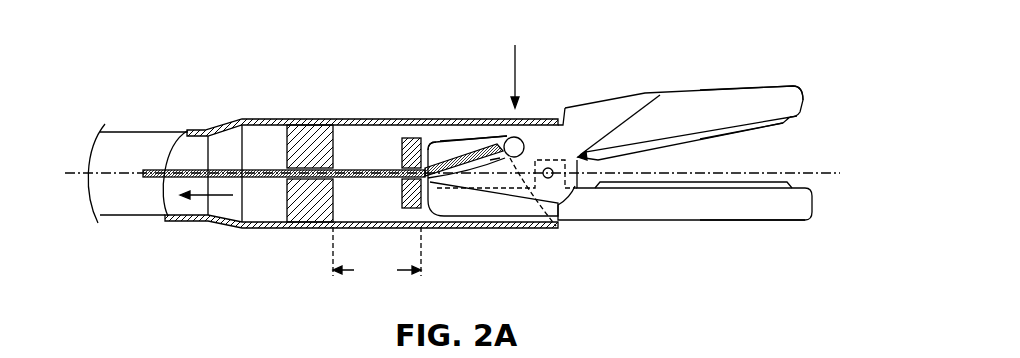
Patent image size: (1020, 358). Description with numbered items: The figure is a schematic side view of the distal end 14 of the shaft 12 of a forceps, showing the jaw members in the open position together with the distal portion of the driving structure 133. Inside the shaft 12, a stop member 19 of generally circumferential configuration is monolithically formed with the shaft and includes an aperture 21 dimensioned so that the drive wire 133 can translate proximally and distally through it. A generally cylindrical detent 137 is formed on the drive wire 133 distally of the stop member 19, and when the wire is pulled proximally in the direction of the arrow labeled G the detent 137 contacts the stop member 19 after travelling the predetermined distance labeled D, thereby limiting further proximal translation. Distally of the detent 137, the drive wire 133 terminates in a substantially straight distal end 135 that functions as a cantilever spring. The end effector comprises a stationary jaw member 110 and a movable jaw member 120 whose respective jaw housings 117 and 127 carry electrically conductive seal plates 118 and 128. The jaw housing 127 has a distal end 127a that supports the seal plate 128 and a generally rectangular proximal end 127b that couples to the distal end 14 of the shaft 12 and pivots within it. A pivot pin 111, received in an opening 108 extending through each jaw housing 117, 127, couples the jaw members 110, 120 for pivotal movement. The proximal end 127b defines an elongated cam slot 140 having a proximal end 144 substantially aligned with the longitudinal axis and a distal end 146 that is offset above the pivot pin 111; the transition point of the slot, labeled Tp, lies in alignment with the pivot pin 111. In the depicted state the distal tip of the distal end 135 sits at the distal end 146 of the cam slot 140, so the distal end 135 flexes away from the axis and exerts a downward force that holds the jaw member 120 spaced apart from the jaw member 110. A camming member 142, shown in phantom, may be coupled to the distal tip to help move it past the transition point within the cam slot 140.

The shaft 12 is at (128, 130).
The driving structure 133 is at (263, 168).
The aperture 21 is at (268, 178).
The stop member 19 is at (283, 184).
The detent 137 is at (406, 137).
The distal end 14 is at (430, 140).
The proximal end 144 is at (452, 150).
The proximal end 127b is at (468, 148).
The distal end 135 is at (438, 168).
The cam slot 140 is at (463, 192).
The camming member 142 is at (556, 226).
The distal end 146 is at (530, 125).
The pivot pin 111 is at (551, 178).
The jaw housing 127 is at (643, 92).
The opening 108 is at (660, 95).
The distal end 127a is at (773, 87).
The jaw member 120 is at (796, 85).
The seal plate 128 is at (784, 122).
The jaw member 110 is at (798, 220).
The jaw housing 117 is at (780, 221).
The seal plate 118 is at (667, 183).